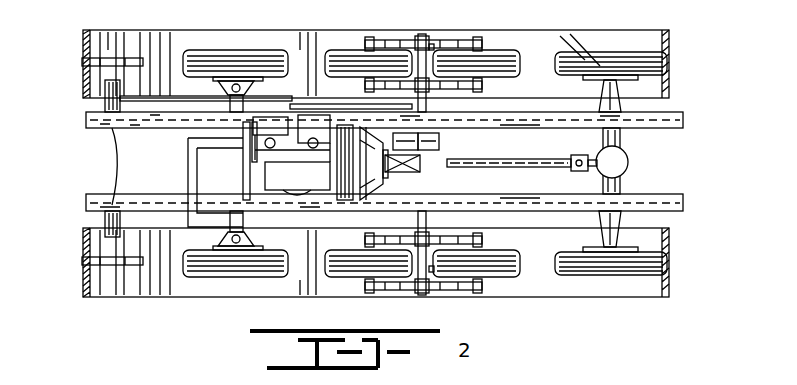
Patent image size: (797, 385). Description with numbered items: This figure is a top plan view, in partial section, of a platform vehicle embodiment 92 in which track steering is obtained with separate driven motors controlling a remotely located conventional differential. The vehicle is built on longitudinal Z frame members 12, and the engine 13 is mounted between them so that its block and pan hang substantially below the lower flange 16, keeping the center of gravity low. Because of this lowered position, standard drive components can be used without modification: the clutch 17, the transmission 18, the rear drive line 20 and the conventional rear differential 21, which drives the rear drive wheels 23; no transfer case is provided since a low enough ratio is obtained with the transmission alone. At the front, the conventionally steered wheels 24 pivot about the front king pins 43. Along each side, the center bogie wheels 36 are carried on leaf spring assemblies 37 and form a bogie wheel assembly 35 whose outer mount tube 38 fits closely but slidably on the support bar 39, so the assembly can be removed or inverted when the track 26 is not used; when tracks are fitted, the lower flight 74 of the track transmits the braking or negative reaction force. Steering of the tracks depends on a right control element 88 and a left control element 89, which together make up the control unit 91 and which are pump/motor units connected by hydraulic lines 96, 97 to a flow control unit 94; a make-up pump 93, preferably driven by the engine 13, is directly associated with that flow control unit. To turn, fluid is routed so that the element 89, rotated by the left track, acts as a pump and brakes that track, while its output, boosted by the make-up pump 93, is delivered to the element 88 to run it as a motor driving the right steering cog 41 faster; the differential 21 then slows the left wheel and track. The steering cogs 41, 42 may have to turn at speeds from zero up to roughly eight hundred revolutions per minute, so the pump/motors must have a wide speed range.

The longitudinal Z frame members 12 is at (684, 120).
The engine 13 is at (307, 183).
The lower flange 16 is at (636, 134).
The clutch 17 is at (376, 163).
The transmission 18 is at (392, 176).
The rear drive line 20 is at (510, 168).
The rear differential 21 is at (623, 171).
The drive wheels 23 is at (617, 164).
The front steered wheels 24 is at (211, 50).
The track 26 is at (162, 31).
The bogie wheel assembly 35 is at (440, 45).
The center bogie wheels 36 is at (336, 52).
The leaf spring assemblies 37 is at (390, 38).
The outer mount tube 38 is at (422, 34).
The support bar 39 is at (428, 108).
The right steering cog 41 is at (80, 61).
The left steering cog 42 is at (80, 261).
The front king pins 43 is at (260, 84).
The lower flight 74 is at (281, 27).
The right control element 88 is at (103, 104).
The left control element 89 is at (103, 218).
The control unit 91 is at (116, 150).
The vehicle chassis 92 is at (686, 32).
The make-up pump 93 is at (440, 144).
The flow control unit 94 is at (396, 132).
The hydraulic line 96 is at (175, 101).
The hydraulic line 97 is at (190, 178).